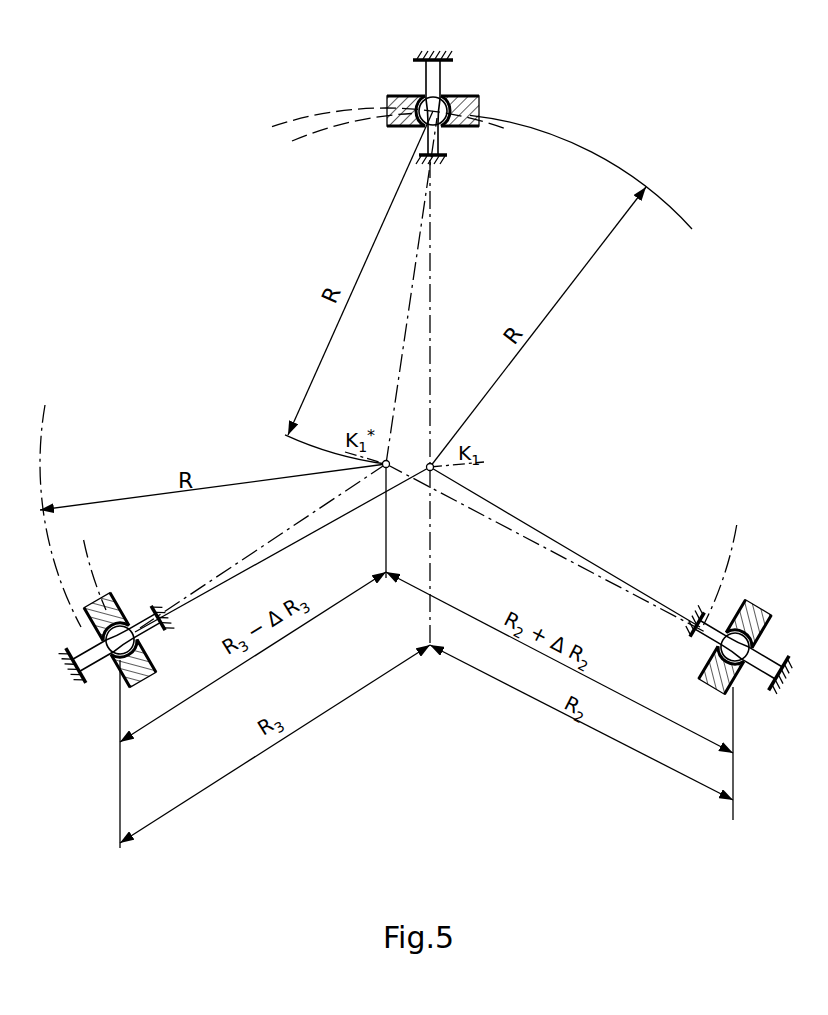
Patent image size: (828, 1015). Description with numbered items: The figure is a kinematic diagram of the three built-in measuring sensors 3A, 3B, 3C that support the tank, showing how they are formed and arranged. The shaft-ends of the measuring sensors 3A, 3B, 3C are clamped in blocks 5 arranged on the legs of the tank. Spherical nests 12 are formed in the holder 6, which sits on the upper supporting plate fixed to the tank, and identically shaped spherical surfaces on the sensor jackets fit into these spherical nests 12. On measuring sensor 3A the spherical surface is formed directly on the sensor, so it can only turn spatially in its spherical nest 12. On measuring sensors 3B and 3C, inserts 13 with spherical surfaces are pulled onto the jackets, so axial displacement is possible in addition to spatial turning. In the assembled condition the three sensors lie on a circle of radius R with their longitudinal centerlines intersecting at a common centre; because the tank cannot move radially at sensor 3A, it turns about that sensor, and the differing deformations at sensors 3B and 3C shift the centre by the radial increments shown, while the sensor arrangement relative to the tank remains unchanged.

The measuring sensor 3A is at (446, 78).
The measuring sensor 3B is at (755, 646).
The measuring sensor 3C is at (90, 651).
The block 5 is at (433, 48).
The holder 6 is at (392, 96).
The spherical nest 12 is at (418, 125).
The insert 13 is at (718, 640).